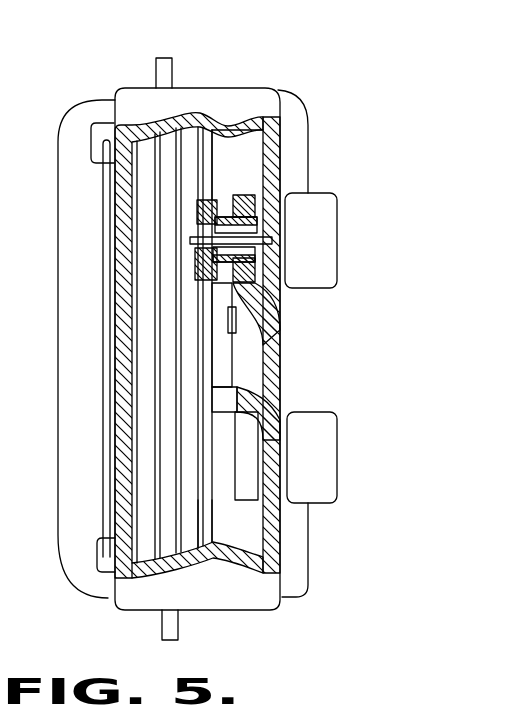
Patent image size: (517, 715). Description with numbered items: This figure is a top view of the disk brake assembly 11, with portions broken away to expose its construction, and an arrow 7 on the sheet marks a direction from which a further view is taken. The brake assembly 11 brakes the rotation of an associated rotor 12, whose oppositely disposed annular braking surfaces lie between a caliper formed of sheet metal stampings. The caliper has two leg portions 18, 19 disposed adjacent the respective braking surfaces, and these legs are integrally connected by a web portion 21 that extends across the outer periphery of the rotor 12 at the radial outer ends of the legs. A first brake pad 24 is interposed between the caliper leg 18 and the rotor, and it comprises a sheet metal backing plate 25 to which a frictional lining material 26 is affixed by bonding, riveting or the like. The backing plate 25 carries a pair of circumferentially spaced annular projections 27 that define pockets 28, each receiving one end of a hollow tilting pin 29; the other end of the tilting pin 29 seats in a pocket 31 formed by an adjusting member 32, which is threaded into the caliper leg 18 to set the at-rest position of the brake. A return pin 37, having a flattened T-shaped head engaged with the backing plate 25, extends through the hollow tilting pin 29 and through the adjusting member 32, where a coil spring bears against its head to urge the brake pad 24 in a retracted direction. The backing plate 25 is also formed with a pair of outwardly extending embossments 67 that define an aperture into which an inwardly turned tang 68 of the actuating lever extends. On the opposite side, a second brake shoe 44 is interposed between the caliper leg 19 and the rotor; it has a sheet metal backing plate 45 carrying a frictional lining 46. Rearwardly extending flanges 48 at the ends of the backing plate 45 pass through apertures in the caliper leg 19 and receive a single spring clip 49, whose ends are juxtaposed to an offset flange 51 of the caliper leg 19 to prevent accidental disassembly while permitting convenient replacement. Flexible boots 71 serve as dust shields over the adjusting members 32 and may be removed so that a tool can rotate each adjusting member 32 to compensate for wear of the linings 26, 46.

The viewing direction arrow 7 is at (52, 148).
The disk brake assembly 11 is at (205, 64).
The rotor 12 is at (180, 630).
The leg portion 18 is at (272, 551).
The leg portion 19 is at (115, 371).
The web portion 21 is at (311, 240).
The first brake pad 24 is at (213, 536).
The backing plate 25 is at (207, 147).
The frictional lining material 26 is at (197, 552).
The annular projections 27 is at (222, 196).
The pockets 28 is at (220, 253).
The tilting pin 29 is at (250, 222).
The pocket 31 is at (256, 204).
The adjusting member 32 is at (247, 193).
The return pin 37 is at (257, 251).
The second brake shoe 44 is at (130, 493).
The backing plate 45 is at (127, 330).
The frictional lining 46 is at (147, 557).
The flanges 48 is at (99, 130).
The spring clip 49 is at (105, 228).
The offset flange 51 is at (70, 411).
The embossments 67 is at (223, 323).
The tang 68 is at (222, 348).
The flexible boots 71 is at (327, 495).